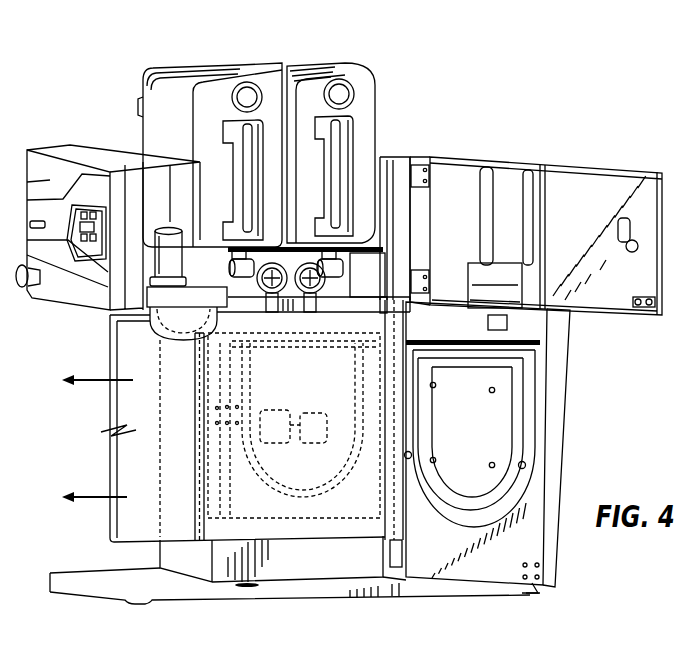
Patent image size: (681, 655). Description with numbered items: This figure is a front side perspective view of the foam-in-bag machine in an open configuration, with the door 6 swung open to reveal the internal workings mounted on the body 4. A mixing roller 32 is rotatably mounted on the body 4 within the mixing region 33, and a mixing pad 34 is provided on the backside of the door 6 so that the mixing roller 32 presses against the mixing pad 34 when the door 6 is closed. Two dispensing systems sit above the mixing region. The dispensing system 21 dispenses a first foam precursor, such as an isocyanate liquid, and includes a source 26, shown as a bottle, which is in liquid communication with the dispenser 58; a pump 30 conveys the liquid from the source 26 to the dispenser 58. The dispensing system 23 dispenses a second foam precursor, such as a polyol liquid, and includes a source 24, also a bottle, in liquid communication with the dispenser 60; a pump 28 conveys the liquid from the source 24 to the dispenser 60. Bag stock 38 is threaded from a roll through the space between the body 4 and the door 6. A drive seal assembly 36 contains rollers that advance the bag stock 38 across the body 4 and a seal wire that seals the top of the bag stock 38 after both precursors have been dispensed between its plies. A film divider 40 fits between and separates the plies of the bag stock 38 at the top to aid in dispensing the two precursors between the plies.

The body 4 is at (308, 560).
The door 6 is at (590, 167).
The dispensing system 21 is at (155, 65).
The dispensing system 23 is at (347, 65).
The source 24 is at (373, 82).
The source 26 is at (137, 105).
The pump 28 is at (325, 280).
The pump 30 is at (272, 263).
The mixing roller 32 is at (287, 443).
The mixing region 33 is at (318, 462).
The mixing pad 34 is at (473, 425).
The drive seal assembly 36 is at (157, 322).
The bag stock 38 is at (163, 500).
The film divider 40 is at (404, 320).
The dispenser 58 is at (253, 307).
The dispenser 60 is at (326, 308).